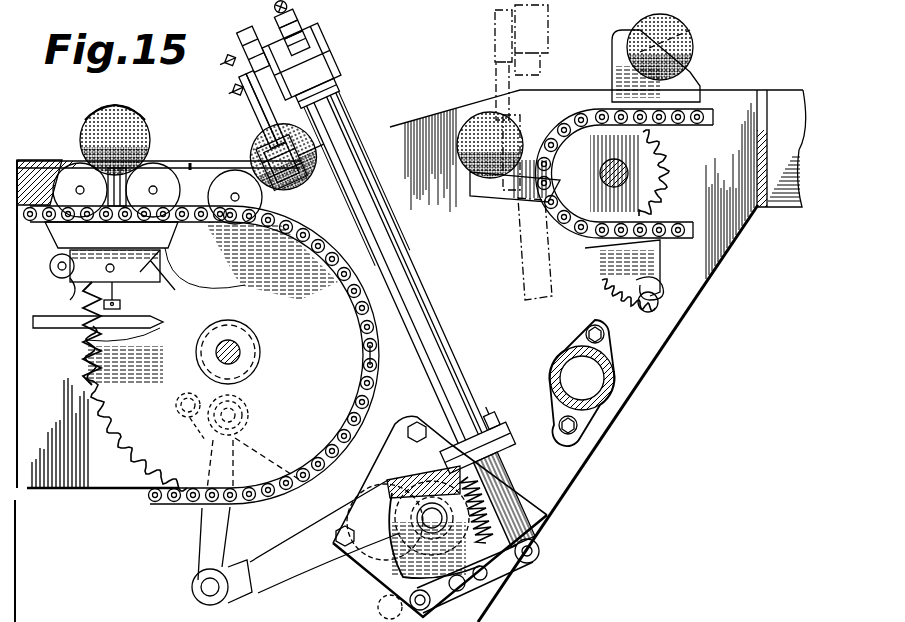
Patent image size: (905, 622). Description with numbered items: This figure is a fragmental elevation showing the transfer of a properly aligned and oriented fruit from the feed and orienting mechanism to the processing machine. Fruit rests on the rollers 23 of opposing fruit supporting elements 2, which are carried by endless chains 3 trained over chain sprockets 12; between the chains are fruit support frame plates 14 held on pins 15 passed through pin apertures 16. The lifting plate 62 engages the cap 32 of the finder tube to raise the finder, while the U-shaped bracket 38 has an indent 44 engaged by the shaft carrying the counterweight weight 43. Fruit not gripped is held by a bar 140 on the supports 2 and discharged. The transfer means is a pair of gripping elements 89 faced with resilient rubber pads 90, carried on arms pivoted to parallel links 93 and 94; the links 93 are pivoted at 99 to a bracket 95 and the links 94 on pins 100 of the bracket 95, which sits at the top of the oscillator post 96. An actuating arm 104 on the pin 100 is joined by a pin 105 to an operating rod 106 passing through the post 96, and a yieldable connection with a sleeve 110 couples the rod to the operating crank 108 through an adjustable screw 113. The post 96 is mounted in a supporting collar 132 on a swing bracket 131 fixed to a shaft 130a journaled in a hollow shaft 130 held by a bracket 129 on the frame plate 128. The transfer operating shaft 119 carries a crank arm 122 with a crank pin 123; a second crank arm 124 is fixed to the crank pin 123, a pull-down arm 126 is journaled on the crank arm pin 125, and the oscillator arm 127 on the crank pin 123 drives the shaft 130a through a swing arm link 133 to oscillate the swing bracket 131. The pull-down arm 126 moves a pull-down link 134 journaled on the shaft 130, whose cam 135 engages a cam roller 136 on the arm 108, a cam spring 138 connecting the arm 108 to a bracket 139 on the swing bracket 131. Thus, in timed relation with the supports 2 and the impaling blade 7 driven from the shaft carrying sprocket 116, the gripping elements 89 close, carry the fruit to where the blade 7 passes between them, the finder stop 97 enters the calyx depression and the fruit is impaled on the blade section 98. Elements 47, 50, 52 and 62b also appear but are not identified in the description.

The fruit supporting elements 2 is at (55, 234).
The endless chains 3 is at (160, 510).
The impaling blades 7 is at (498, 186).
The chain sprockets 12 is at (352, 360).
The fruit support frame plates 14 is at (165, 260).
The pins 15 is at (170, 224).
The pin apertures 16 is at (60, 222).
The rollers 23 is at (152, 162).
The cap 32 is at (122, 304).
The U-shaped bracket 38 is at (145, 284).
The weight 43 is at (56, 275).
The indent 44 is at (78, 290).
The frame wall 47 is at (100, 490).
The rail 50 is at (45, 164).
The roller 52 is at (74, 163).
The lifting plate 62 is at (72, 328).
The plate 62b is at (160, 318).
The gripping elements 89 is at (318, 176).
The resilient rubber pad facing 90 is at (300, 138).
The parallel links 93 is at (256, 114).
The links 94 is at (268, 130).
The bracket 95 is at (318, 84).
The oscillator post 96 is at (430, 318).
The finder stop 97 is at (692, 36).
The blade section 98 is at (700, 84).
The pivot 99 is at (236, 92).
The pins 100 is at (228, 70).
The actuating arm 104 is at (292, 16).
The pin 105 is at (306, 32).
The operating rod 106 is at (312, 48).
The operating crank 108 is at (512, 568).
The sleeve 110 is at (508, 468).
The screw 113 is at (540, 548).
The sprocket 116 is at (666, 136).
The transfer operating shaft 119 is at (240, 350).
The crank arm 122 is at (248, 384).
The crank pin 123 is at (249, 416).
The second crank arm 124 is at (190, 422).
The crank arm pin 125 is at (176, 410).
The pull down arm 126 is at (295, 522).
The oscillator arm 127 is at (206, 530).
The frame plate 128 is at (572, 452).
The bracket 129 is at (396, 434).
The hollow shaft 130 is at (405, 512).
The shaft 130a is at (380, 490).
The swing bracket 131 is at (432, 472).
The supporting collar 132 is at (494, 440).
The swing arm link 133 is at (278, 570).
The pull-down link 134 is at (414, 556).
The cam 135 is at (400, 530).
The cam roller 136 is at (478, 606).
The cam spring 138 is at (500, 478).
The bracket 139 is at (482, 424).
The bar 140 is at (190, 165).